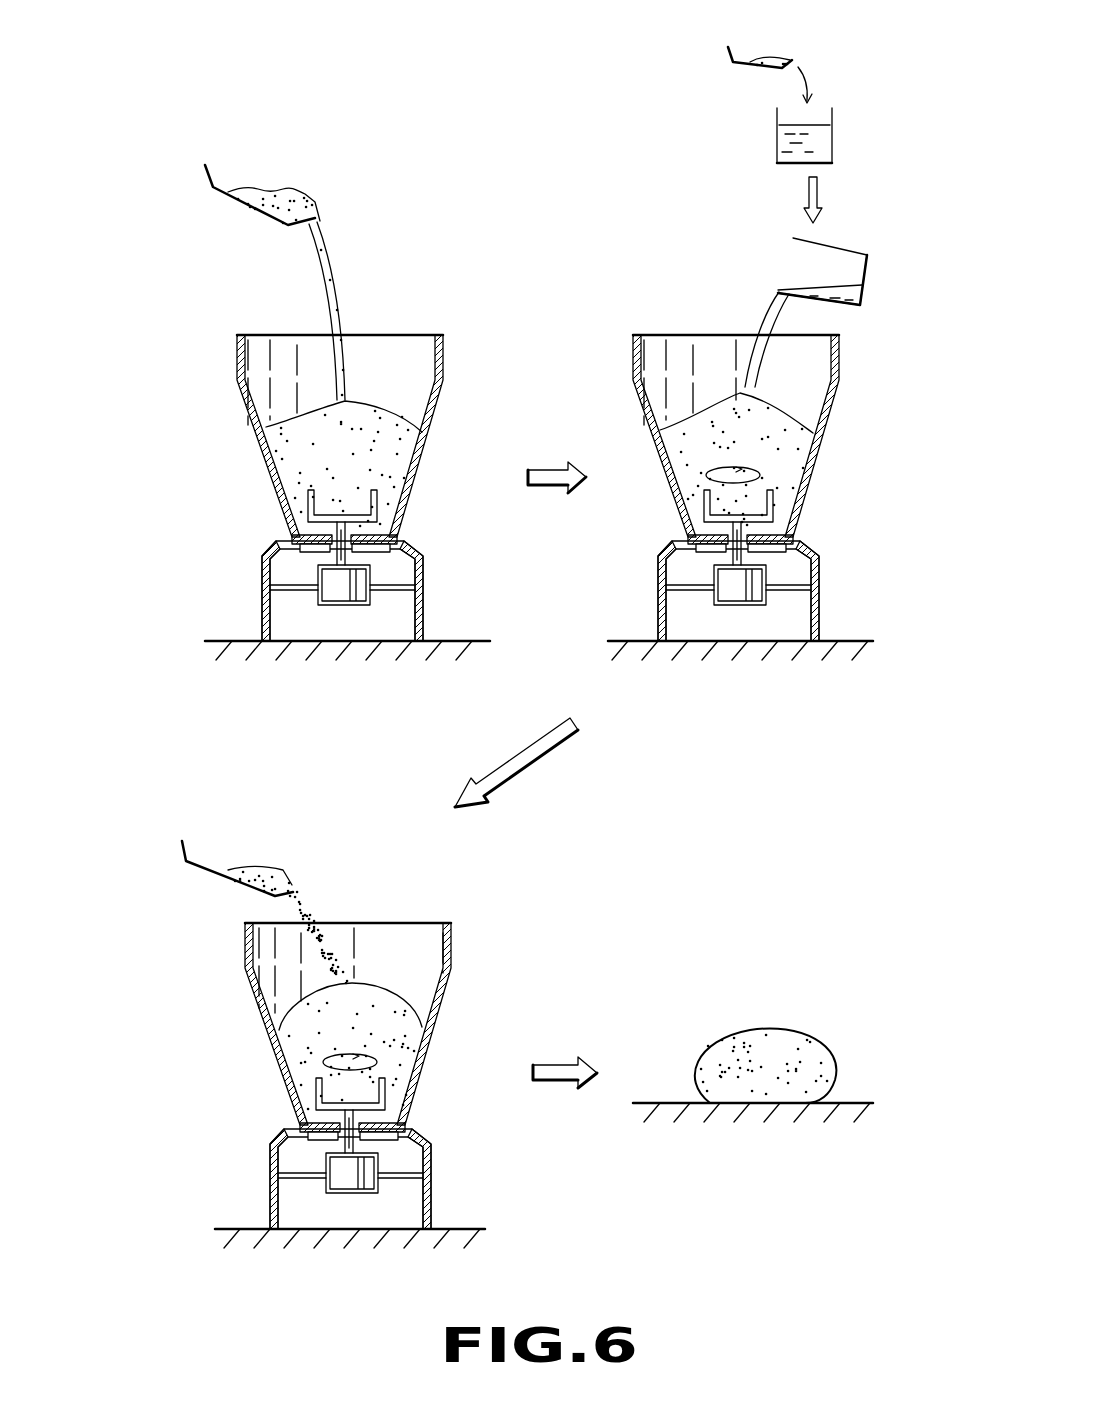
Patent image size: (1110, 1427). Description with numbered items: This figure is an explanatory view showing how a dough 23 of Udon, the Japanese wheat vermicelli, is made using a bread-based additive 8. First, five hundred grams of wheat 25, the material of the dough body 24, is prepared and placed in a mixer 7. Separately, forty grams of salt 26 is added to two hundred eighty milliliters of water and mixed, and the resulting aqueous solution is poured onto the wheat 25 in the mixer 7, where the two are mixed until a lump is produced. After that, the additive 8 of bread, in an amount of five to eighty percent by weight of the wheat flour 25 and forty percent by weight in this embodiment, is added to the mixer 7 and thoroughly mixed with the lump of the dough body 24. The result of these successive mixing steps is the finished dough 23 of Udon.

The mixer 7 is at (434, 458).
The wheat 25 is at (303, 198).
The salt 26 is at (780, 53).
The additive of bread 8 is at (287, 878).
The dough body 24 is at (382, 992).
The dough 23 is at (790, 1038).